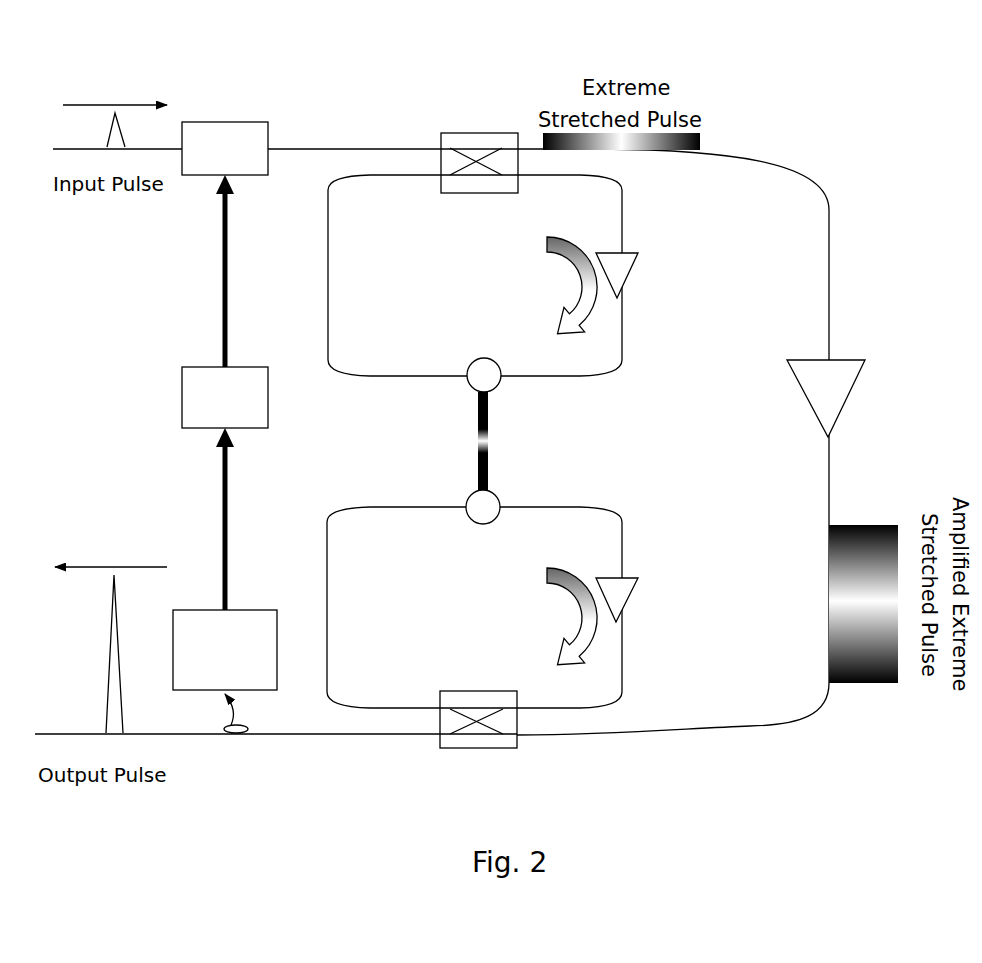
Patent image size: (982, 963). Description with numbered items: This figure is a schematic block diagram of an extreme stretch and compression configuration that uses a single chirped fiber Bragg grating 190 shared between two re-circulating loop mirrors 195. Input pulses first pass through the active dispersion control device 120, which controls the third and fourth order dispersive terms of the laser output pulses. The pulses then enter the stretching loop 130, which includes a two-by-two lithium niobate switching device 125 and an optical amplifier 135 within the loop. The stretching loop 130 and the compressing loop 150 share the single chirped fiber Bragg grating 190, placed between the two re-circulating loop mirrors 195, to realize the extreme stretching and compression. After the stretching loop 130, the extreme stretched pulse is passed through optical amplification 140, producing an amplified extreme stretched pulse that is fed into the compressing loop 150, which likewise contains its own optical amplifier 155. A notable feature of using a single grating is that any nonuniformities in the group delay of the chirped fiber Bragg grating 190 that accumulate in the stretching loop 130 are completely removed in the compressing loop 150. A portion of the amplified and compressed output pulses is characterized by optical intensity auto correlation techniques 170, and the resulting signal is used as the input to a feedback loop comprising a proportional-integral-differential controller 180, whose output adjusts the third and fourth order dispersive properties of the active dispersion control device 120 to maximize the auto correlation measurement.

The active dispersion control device 120 is at (212, 110).
The 2-x-2 lithium niobate switching device 125 is at (440, 128).
The stretching loop 130 is at (580, 218).
The optical amplifier 135 is at (632, 292).
The optical amplification 140 is at (840, 358).
The compressing loop 150 is at (580, 535).
The optical amplifier 155 is at (630, 608).
The optical intensity auto correlation techniques 170 is at (195, 603).
The proportional-integral-differential (PID) controller 180 is at (177, 392).
The chirped fiber Bragg grating 190 is at (493, 430).
The re-circulating loop mirrors 195 is at (457, 395).